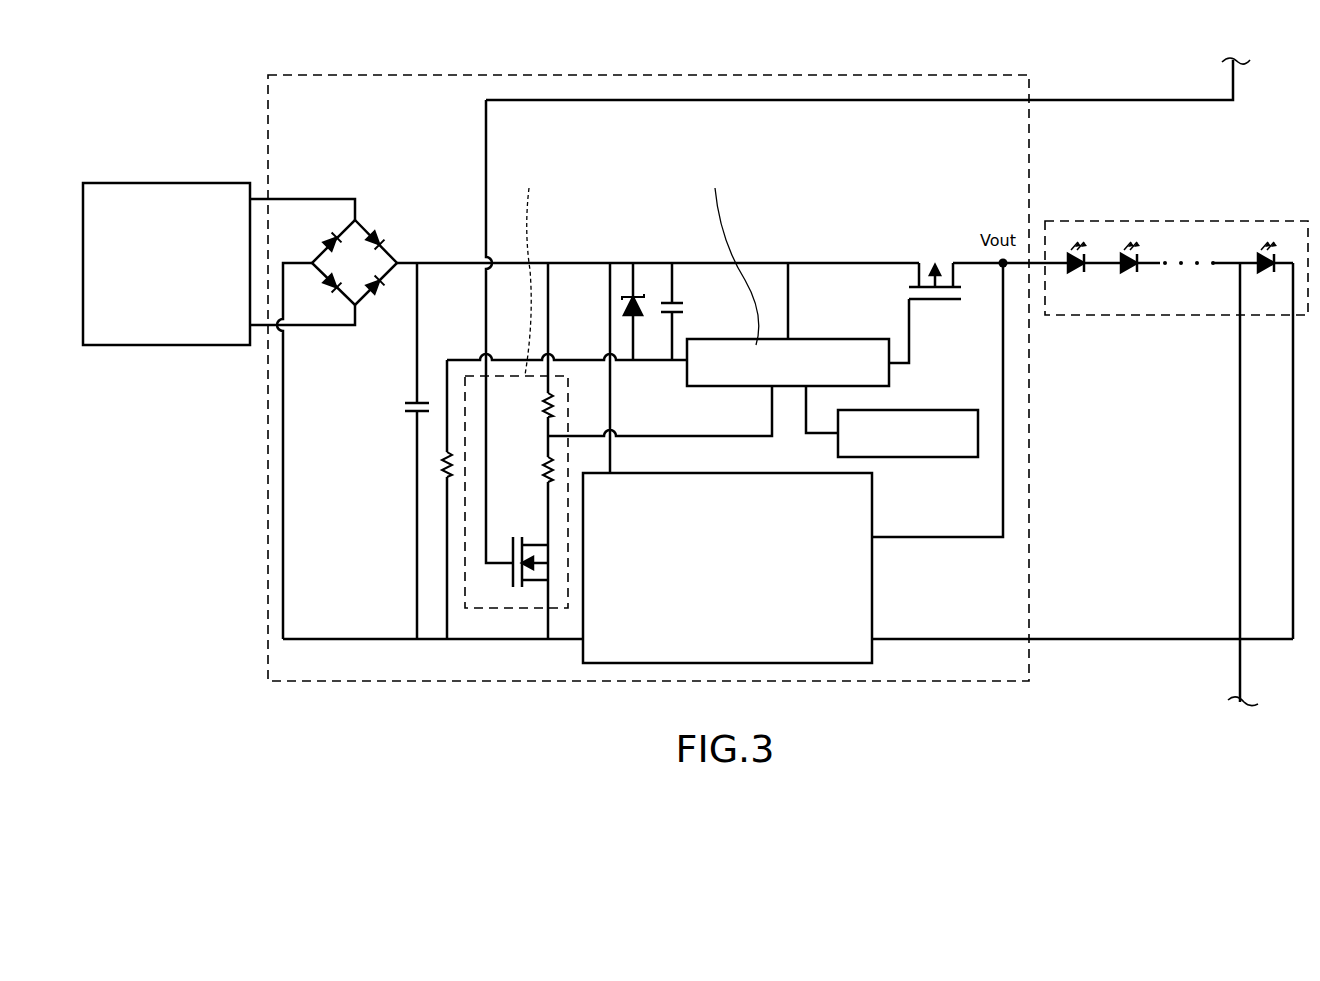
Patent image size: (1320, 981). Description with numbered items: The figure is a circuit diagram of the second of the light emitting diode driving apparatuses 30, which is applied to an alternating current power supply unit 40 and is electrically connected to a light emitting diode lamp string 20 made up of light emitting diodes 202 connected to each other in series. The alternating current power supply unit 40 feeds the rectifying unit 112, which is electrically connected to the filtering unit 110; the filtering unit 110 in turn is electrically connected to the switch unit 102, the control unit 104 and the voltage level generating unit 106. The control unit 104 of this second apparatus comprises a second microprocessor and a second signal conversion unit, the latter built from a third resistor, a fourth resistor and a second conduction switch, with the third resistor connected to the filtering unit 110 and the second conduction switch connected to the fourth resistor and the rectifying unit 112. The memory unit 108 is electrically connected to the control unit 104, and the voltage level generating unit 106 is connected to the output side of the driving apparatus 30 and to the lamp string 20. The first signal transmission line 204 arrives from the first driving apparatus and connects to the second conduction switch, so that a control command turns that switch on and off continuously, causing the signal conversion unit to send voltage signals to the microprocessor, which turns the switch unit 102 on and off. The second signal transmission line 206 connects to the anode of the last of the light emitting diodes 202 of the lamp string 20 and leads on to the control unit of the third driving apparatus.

The light emitting diode driving apparatus 30 is at (383, 86).
The alternating current power supply unit 40 is at (137, 204).
The rectifying unit 112 is at (378, 222).
The filtering unit 110 is at (402, 407).
The control unit 104 is at (542, 150).
The switch unit 102 is at (940, 257).
The memory unit 108 is at (937, 410).
The voltage level generating unit 106 is at (873, 580).
The light emitting diode lamp string 20 is at (1176, 307).
The light emitting diode 202 is at (1085, 283).
The first signal transmission line 204 is at (1115, 100).
The second signal transmission line 206 is at (1237, 665).